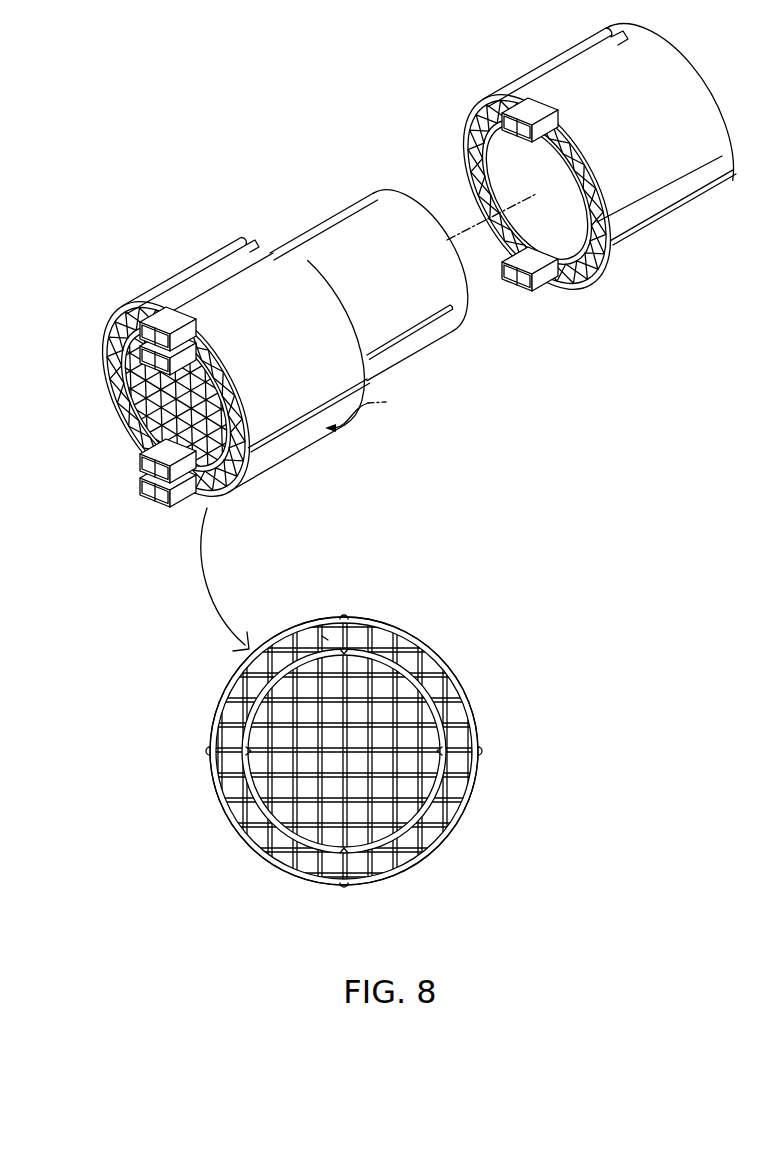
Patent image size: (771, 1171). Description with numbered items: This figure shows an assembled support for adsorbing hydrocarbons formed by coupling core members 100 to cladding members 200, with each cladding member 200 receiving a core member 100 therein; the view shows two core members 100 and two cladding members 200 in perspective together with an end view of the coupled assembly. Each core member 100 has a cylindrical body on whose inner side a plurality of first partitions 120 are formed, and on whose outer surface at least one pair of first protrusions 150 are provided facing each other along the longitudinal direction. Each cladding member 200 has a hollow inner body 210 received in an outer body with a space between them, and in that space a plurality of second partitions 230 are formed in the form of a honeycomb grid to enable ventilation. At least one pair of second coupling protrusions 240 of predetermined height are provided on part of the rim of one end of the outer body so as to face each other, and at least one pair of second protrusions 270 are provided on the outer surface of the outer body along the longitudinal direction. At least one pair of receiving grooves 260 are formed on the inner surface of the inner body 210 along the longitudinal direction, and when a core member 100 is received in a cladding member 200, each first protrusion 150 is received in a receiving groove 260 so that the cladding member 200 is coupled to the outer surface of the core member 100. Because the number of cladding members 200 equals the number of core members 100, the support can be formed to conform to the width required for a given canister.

The core member 100 is at (373, 188).
The cladding member 200 is at (219, 232).
The first partition 120 is at (353, 669).
The first protrusion 150 is at (482, 751).
The inner body 210 is at (326, 638).
The second partition 230 is at (225, 722).
The second coupling protrusion 240 is at (344, 612).
The receiving groove 260 is at (350, 650).
The second protrusion 270 is at (205, 752).